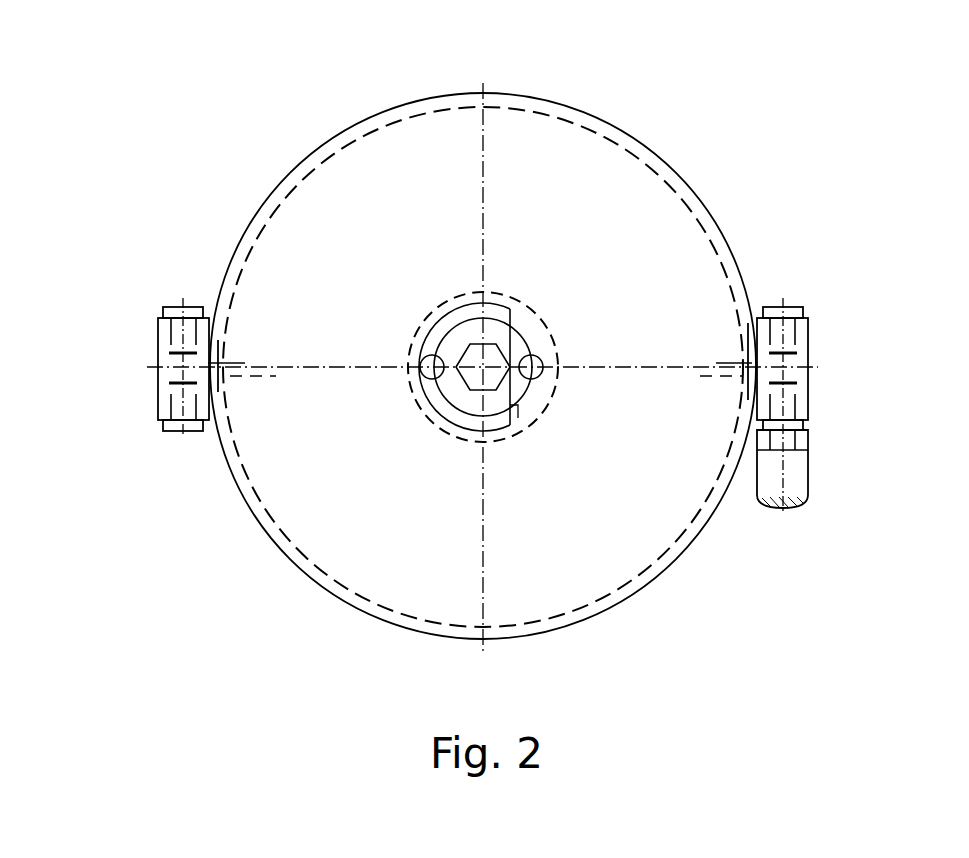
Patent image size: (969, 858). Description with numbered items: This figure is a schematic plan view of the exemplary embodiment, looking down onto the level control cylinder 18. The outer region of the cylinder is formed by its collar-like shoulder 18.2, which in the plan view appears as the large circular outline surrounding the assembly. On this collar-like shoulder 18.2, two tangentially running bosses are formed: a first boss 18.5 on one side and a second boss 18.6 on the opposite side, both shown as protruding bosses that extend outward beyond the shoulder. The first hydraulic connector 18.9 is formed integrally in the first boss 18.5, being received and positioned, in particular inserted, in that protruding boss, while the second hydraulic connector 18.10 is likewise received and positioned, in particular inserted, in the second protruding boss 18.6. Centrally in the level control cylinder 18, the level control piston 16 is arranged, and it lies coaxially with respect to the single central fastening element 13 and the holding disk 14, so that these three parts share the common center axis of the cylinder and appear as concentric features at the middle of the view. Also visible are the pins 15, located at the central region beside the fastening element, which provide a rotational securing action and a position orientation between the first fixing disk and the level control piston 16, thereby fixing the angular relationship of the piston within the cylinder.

The single central fastening element 13 is at (496, 292).
The holding disk 14 is at (466, 292).
The pins 15 is at (542, 377).
The level control piston 16 is at (430, 413).
The level control cylinder 18 is at (224, 462).
The collar-like shoulder 18.2 is at (425, 367).
The first boss 18.5 is at (157, 335).
The second boss 18.6 is at (808, 333).
The first hydraulic connector 18.9 is at (160, 420).
The second hydraulic connector 18.10 is at (808, 470).